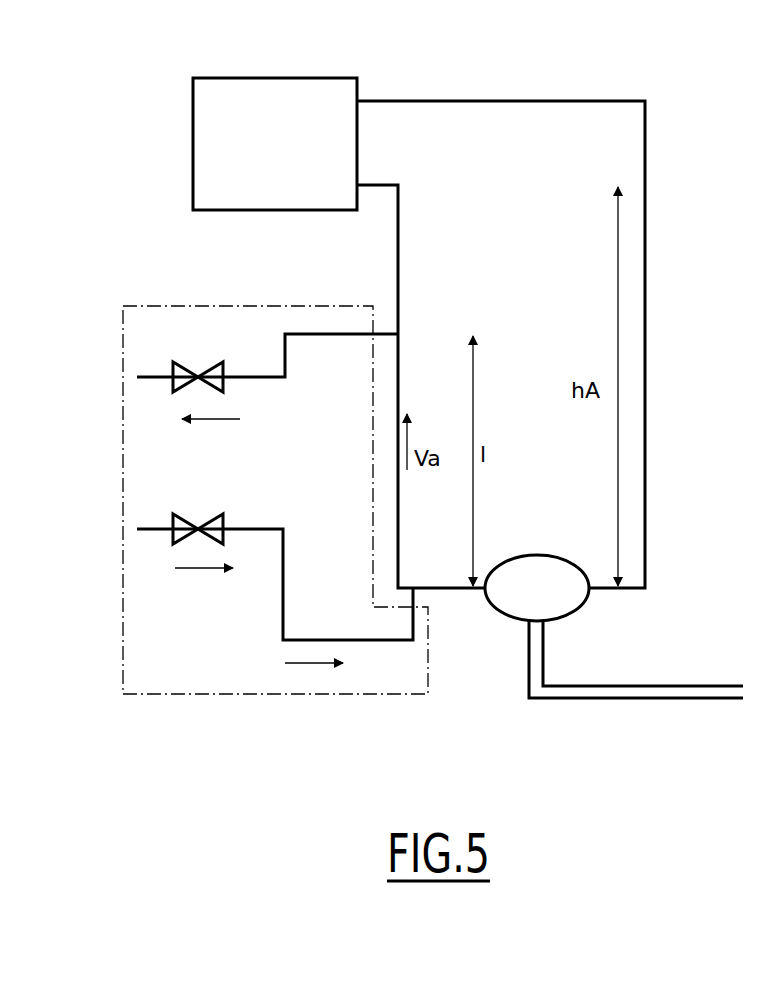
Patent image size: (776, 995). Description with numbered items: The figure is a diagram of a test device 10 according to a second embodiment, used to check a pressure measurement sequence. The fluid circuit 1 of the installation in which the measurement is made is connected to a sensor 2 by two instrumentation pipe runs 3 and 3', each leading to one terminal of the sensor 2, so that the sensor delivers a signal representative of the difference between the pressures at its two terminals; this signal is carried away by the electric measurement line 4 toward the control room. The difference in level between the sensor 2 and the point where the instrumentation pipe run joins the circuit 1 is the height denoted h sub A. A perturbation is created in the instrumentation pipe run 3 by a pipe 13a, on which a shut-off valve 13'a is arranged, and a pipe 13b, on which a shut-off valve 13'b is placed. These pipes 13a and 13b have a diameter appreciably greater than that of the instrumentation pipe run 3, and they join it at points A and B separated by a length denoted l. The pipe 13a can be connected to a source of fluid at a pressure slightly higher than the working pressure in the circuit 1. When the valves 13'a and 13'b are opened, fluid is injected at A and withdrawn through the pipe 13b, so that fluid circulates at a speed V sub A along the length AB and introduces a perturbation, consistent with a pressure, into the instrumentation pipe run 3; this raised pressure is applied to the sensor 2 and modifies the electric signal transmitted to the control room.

The circuit of the installation 1 is at (291, 84).
The sensor 2 is at (527, 558).
The instrumentation pipe run 3 is at (421, 386).
The instrumentation pipe run 3' is at (501, 315).
The electric measurement line 4 is at (697, 685).
The test device 10 is at (318, 706).
The pipe 13a is at (285, 586).
The pipe 13b is at (325, 332).
The shut-off valve 13'a is at (198, 505).
The shut-off valve 13'b is at (198, 355).